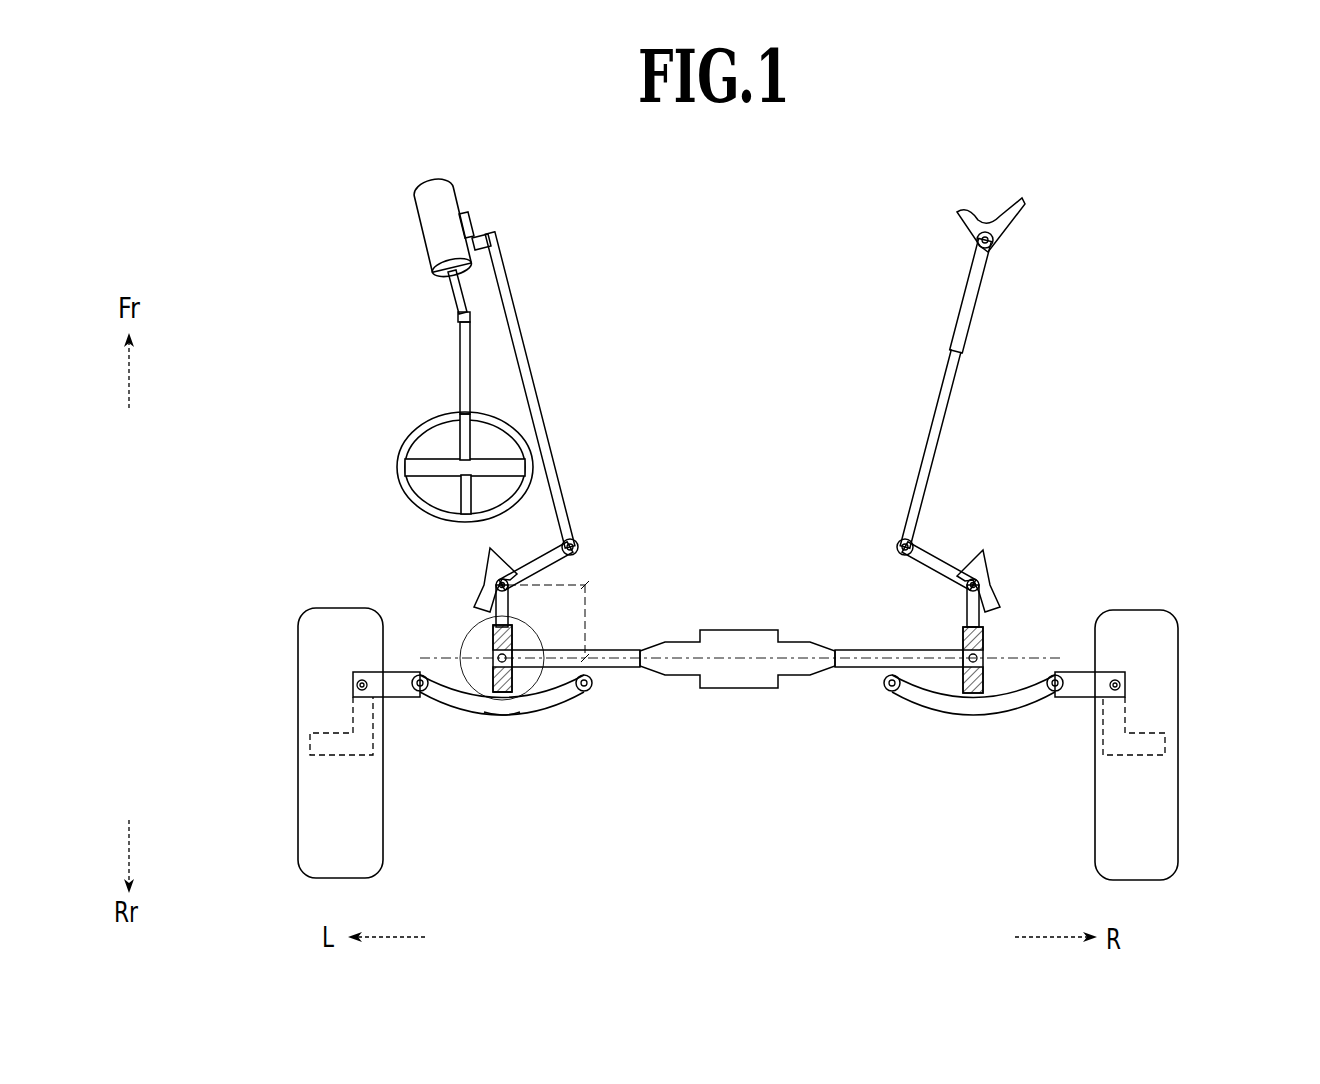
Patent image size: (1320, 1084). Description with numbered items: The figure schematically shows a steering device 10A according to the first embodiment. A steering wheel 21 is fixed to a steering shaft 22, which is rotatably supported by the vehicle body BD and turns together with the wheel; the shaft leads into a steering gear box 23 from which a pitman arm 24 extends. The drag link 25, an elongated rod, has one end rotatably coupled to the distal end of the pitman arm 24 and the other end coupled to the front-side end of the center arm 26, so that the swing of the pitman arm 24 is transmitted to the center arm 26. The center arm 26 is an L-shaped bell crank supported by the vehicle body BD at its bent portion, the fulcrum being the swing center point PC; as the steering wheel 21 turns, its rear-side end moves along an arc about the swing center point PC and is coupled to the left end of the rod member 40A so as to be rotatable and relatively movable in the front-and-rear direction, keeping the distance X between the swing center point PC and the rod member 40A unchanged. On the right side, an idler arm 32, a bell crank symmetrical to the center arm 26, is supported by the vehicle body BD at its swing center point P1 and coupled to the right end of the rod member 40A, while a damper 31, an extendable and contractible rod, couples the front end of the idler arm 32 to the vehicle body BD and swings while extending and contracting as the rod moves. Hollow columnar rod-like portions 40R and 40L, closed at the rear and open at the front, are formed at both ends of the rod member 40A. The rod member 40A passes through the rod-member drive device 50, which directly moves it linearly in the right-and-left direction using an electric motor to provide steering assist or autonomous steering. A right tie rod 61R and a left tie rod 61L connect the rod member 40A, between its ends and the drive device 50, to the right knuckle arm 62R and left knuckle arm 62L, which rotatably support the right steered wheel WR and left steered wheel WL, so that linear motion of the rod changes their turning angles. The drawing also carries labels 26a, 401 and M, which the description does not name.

The steering device 10A is at (232, 232).
The steering wheel 21 is at (397, 456).
The steering shaft 22 is at (460, 378).
The steering gear box 23 is at (410, 208).
The pitman arm 24 is at (478, 222).
The drag link 25 is at (513, 313).
The center arm 26 is at (536, 552).
The pinion 26a is at (478, 652).
The damper 31 is at (940, 387).
The idler arm 32 is at (937, 557).
The rod member 40A is at (862, 648).
The rod-like portion 40L is at (512, 688).
The rod-like portion 40R is at (988, 657).
The housing portion 401 is at (540, 708).
The rod-member drive device 50 is at (733, 677).
The left tie rod 61L is at (500, 706).
The right tie rod 61R is at (976, 717).
The left knuckle arm 62L is at (400, 697).
The right knuckle arm 62R is at (1090, 697).
The left steered wheel WL is at (298, 838).
The right steered wheel WR is at (1178, 845).
The vehicle body BD is at (485, 575).
The motor M is at (470, 625).
The swing center point of the center arm PC is at (520, 578).
The swing center point of the idler arm P1 is at (975, 580).
The distance X is at (555, 621).